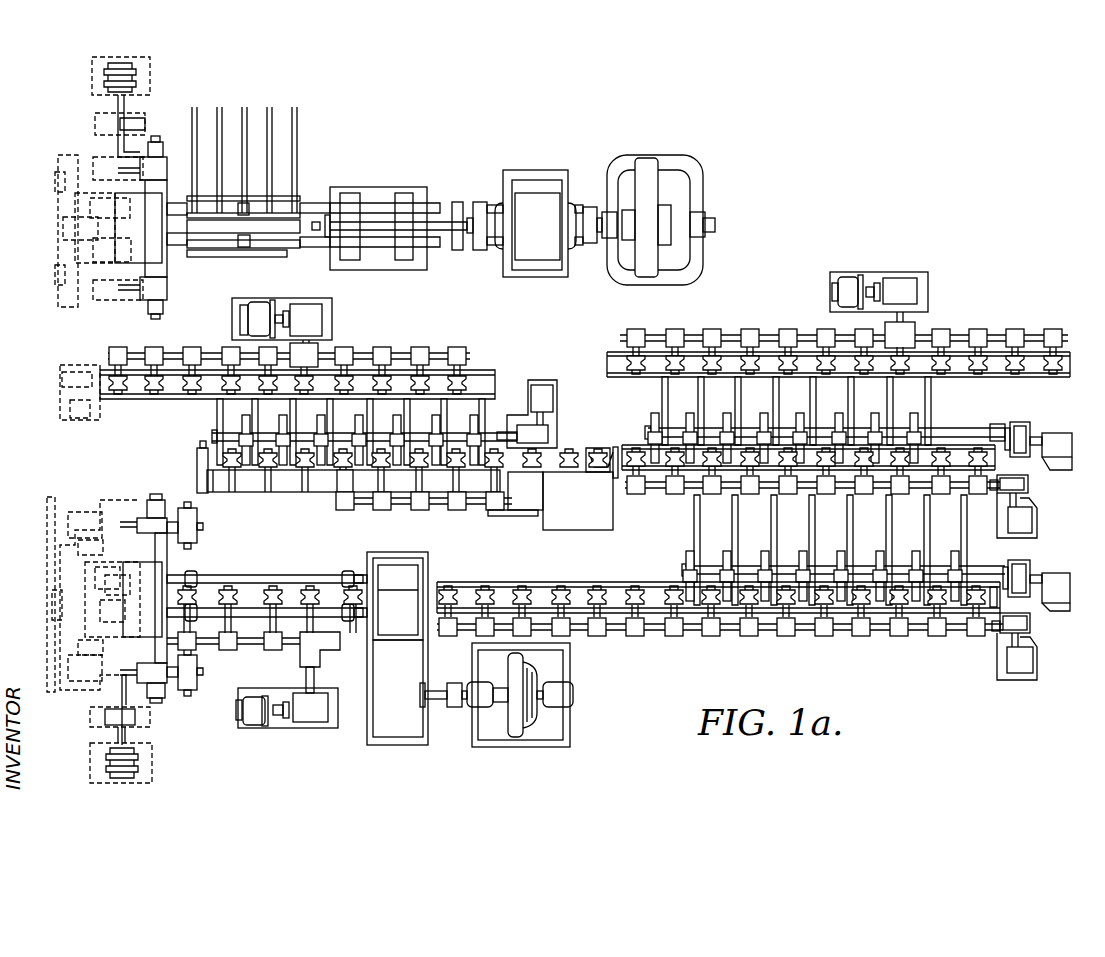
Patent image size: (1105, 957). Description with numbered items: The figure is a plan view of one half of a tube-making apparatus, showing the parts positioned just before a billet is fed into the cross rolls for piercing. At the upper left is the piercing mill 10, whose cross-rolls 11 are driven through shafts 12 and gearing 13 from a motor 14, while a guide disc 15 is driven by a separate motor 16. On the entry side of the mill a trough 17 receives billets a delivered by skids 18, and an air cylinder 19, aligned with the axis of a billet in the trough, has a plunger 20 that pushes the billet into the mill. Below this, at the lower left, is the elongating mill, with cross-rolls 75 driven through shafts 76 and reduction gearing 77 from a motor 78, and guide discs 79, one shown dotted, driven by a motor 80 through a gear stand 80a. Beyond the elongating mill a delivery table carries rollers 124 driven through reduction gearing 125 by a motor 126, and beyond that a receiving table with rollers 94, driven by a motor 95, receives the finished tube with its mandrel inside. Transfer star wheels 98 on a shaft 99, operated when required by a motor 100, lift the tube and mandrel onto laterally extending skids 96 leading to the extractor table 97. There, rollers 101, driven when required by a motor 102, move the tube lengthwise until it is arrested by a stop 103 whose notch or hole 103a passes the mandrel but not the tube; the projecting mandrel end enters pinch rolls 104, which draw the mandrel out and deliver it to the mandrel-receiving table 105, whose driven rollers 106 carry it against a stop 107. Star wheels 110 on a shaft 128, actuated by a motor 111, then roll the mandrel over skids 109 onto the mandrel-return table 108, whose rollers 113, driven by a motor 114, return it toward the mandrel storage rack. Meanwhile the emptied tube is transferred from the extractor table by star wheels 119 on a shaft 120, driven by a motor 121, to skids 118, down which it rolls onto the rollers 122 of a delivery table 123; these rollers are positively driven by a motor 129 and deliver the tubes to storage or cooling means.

The piercing mill 10 is at (157, 187).
The cross-rolls 11 is at (108, 212).
The shafts 12 is at (275, 210).
The gearing 13 is at (542, 250).
The motor 14 is at (650, 172).
The guide disc 15 is at (132, 232).
The motor 16 is at (140, 77).
The trough 17 is at (222, 236).
The skids 18 is at (197, 108).
The air cylinder 19 is at (368, 225).
The plunger 20 is at (322, 224).
The billets a is at (290, 228).
The cross-rolls 75 is at (133, 578).
The shafts 76 is at (282, 578).
The reduction gearing 77 is at (402, 717).
The motor 78 is at (518, 722).
The guide discs 79 is at (137, 603).
The motor 80 is at (135, 768).
The gear stand 80a is at (140, 713).
The rollers 94 is at (633, 590).
The motor 95 is at (1020, 655).
The skids 96 is at (705, 522).
The extractor table 97 is at (958, 443).
The transfer star wheels 98 is at (727, 557).
The shaft 99 is at (993, 553).
The motor 100 is at (1062, 585).
The rollers 101 is at (634, 452).
The motor 102 is at (1027, 517).
The stop 103 is at (620, 455).
The notch or hole 103a is at (617, 463).
The pinch rolls 104 is at (596, 455).
The mandrel-receiving table 105 is at (278, 483).
The rollers 106 is at (415, 455).
The stop 107 is at (200, 453).
The mandrel-return table 108 is at (133, 399).
The skids 109 is at (218, 402).
The star wheels 110 is at (487, 448).
The motor 111 is at (540, 395).
The rollers 113 is at (460, 378).
The motor 114 is at (242, 322).
The skids 118 is at (737, 396).
The star wheels 119 is at (728, 430).
The shaft 120 is at (860, 433).
The motor 121 is at (1043, 433).
The rollers 122 is at (632, 358).
The delivery table 123 is at (683, 356).
The rollers 124 is at (230, 590).
The reduction gearing 125 is at (315, 707).
The motor 126 is at (250, 715).
The shaft 128 is at (215, 438).
The motor 129 is at (840, 290).